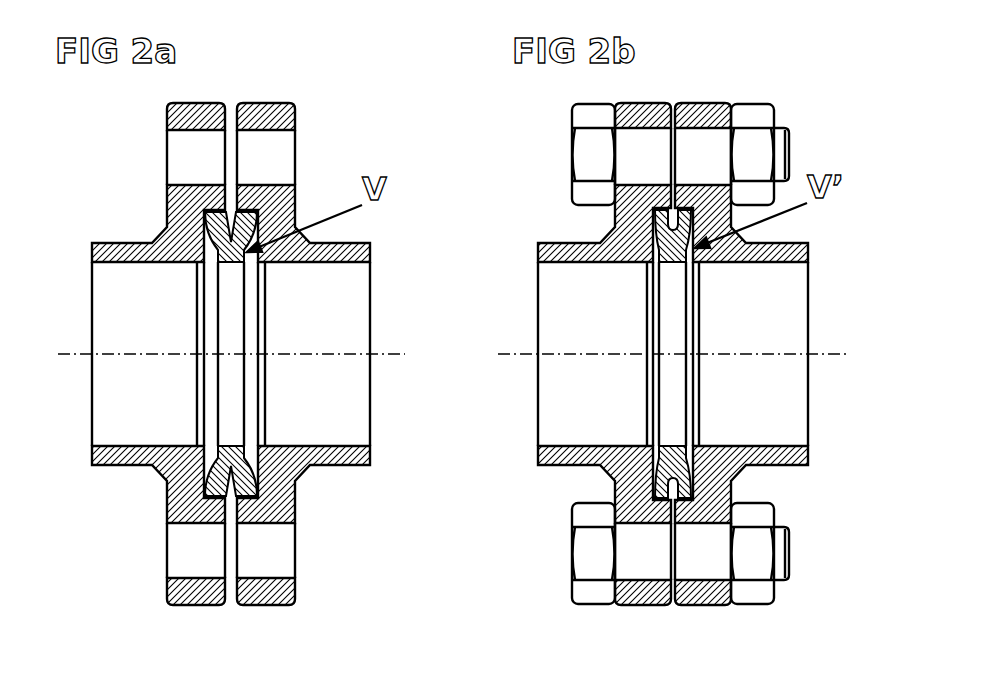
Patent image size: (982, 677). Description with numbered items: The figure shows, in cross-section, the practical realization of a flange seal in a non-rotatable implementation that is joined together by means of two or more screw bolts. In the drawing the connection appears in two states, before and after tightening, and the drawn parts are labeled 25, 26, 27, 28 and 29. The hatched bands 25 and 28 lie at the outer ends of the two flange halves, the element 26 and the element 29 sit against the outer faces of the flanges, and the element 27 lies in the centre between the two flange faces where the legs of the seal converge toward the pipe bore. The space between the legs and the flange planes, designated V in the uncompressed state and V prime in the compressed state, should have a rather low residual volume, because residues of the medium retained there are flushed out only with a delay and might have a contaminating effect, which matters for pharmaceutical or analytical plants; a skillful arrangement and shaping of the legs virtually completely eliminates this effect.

In FIG. 2a, the bolt 25 is at (200, 117).
In FIG. 2b, the bolt 25 is at (717, 115).
In FIG. 2b, the nut 26 is at (590, 165).
In FIG. 2a, the sealing ring 27 is at (230, 311).
In FIG. 2b, the sealing ring 27 is at (672, 309).
In FIG. 2a, the bolt 28 is at (272, 505).
In FIG. 2b, the bolt 28 is at (632, 503).
In FIG. 2b, the nut 29 is at (590, 557).